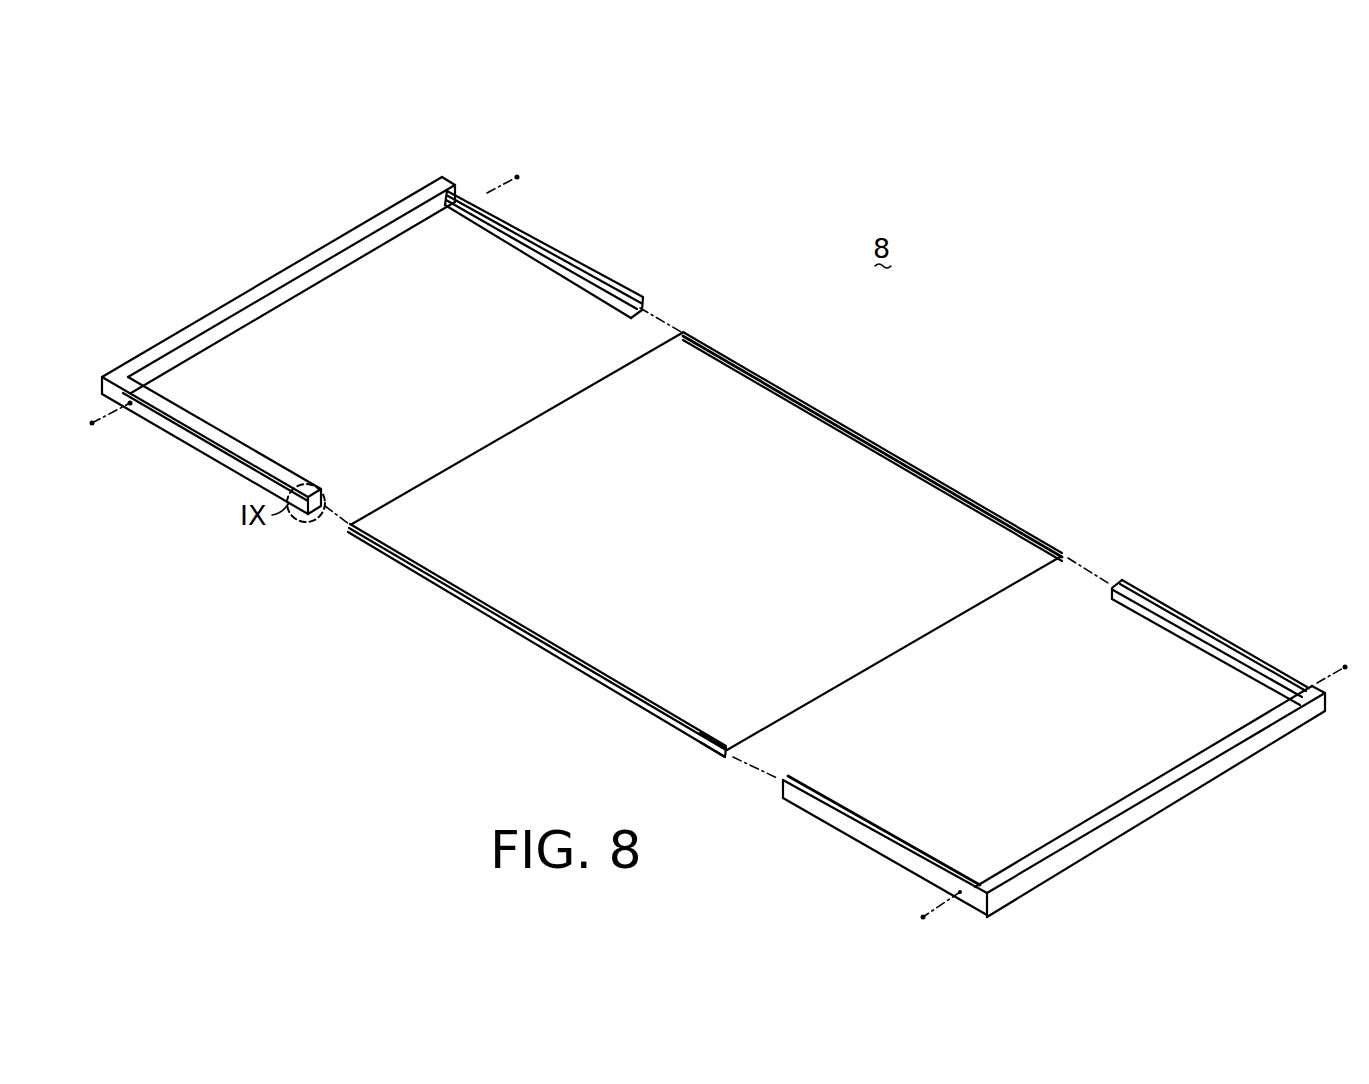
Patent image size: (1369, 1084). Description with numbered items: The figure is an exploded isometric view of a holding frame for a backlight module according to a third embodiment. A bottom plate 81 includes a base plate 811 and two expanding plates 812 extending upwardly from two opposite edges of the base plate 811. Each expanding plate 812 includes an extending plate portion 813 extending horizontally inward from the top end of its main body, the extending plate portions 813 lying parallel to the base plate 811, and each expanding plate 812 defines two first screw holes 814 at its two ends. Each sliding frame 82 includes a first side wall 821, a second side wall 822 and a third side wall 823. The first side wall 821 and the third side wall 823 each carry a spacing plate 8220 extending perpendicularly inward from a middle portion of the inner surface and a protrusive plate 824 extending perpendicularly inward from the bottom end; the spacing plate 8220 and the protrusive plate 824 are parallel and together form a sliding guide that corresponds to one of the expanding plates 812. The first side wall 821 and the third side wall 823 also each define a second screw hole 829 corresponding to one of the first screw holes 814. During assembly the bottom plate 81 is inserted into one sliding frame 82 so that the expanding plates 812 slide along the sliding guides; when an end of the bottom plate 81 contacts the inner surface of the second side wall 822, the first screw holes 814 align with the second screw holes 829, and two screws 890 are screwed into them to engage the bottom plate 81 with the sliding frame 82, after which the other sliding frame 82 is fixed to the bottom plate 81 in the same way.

The bottom plate 81 is at (705, 572).
The base plate 811 is at (908, 520).
The expanding plate 812 is at (535, 643).
The extending plate portion 813 is at (705, 572).
The first screw hole 814 is at (710, 742).
The sliding frame 82 is at (713, 545).
The first side wall 821 is at (211, 445).
The second side wall 822 is at (272, 285).
The third side wall 823 is at (584, 269).
The spacing plate 8220 is at (622, 295).
The protrusive plate 824 is at (630, 312).
The second screw hole 829 is at (130, 405).
The screw 890 is at (92, 425).